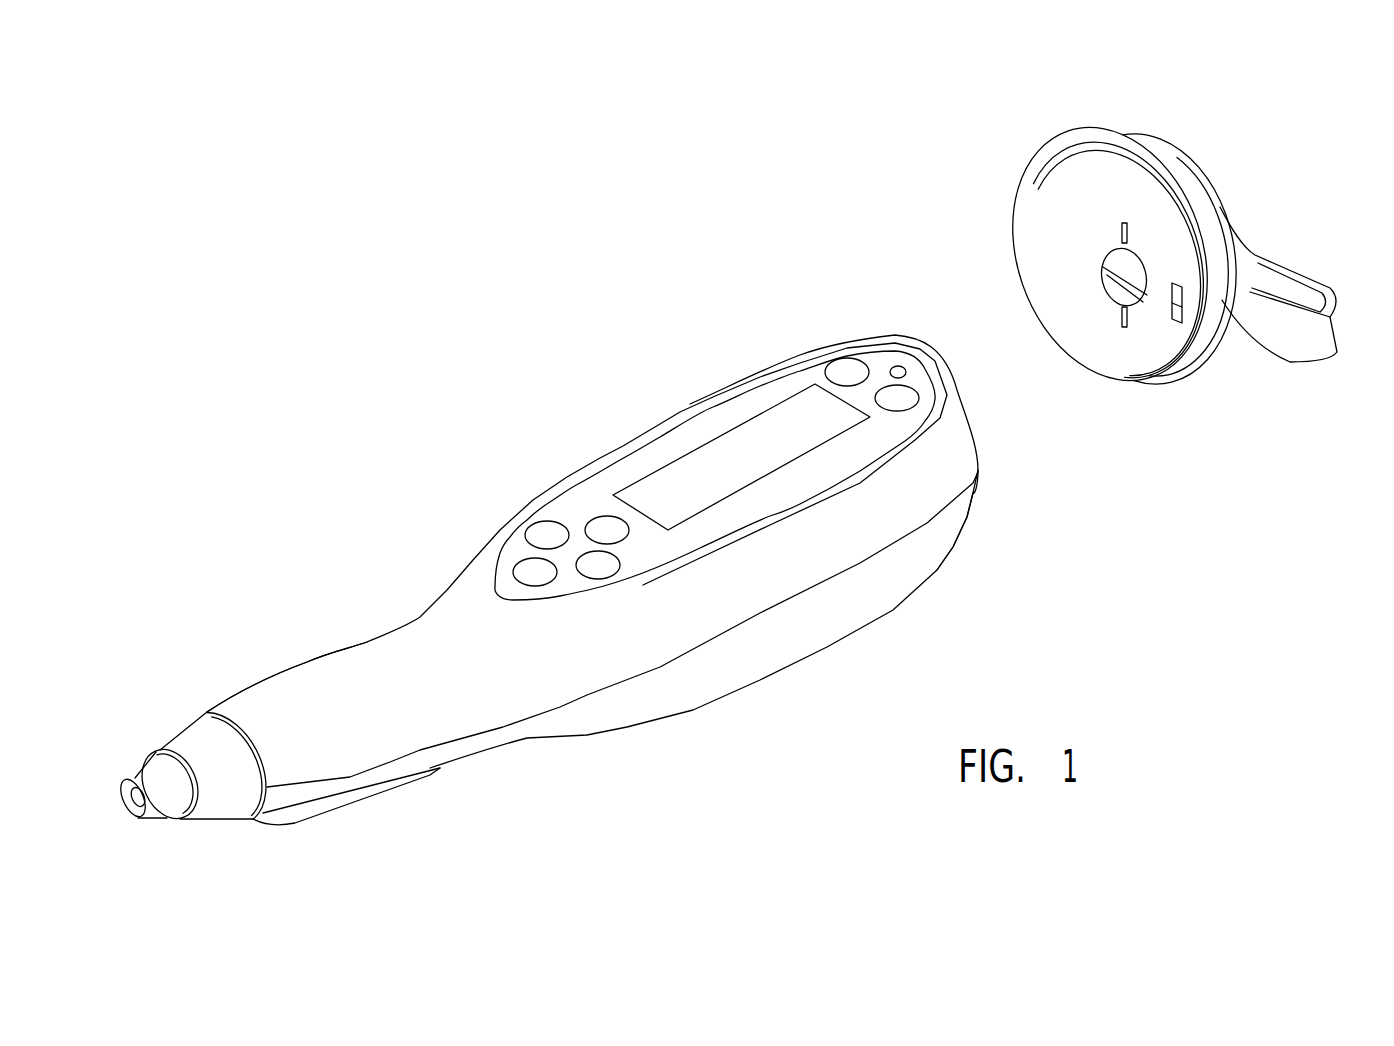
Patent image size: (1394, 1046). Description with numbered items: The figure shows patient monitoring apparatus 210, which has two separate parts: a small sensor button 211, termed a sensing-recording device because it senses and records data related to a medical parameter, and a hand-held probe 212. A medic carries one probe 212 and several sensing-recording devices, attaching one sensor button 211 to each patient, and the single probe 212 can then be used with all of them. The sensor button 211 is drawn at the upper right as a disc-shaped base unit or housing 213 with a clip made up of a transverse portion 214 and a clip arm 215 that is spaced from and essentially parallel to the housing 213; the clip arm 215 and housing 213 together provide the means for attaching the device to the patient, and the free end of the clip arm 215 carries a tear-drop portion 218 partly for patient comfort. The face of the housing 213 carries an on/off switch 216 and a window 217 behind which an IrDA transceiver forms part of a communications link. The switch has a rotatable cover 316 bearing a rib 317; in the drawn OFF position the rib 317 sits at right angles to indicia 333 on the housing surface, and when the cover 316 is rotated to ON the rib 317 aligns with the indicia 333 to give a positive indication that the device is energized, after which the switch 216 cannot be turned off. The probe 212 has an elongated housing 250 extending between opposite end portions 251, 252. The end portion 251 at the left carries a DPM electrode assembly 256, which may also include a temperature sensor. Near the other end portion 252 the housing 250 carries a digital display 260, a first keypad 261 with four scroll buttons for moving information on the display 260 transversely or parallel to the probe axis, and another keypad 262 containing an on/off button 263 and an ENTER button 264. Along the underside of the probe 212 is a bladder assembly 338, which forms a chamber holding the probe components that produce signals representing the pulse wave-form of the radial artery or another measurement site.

The patient monitoring apparatus 210 is at (578, 341).
The sensor button 211 is at (1000, 148).
The probe 212 is at (428, 481).
The housing 213 is at (1155, 153).
The transverse portion 214 is at (1317, 337).
The clip arm 215 is at (1307, 273).
The on/off switch 216 is at (1100, 252).
The window 217 is at (1180, 302).
The tear-drop portion 218 is at (1220, 208).
The housing 250 is at (307, 670).
The end portion 251 is at (155, 752).
The end portion 252 is at (978, 420).
The DPM electrode assembly 256 is at (127, 813).
The digital display 260 is at (733, 443).
The first keypad 261 is at (572, 515).
The keypad 262 is at (912, 345).
The on/off button 263 is at (912, 395).
The ENTER button 264 is at (847, 362).
The cover 316 is at (1123, 293).
The rib 317 is at (1110, 266).
The indicia 333 is at (1203, 172).
The bladder assembly 338 is at (327, 810).